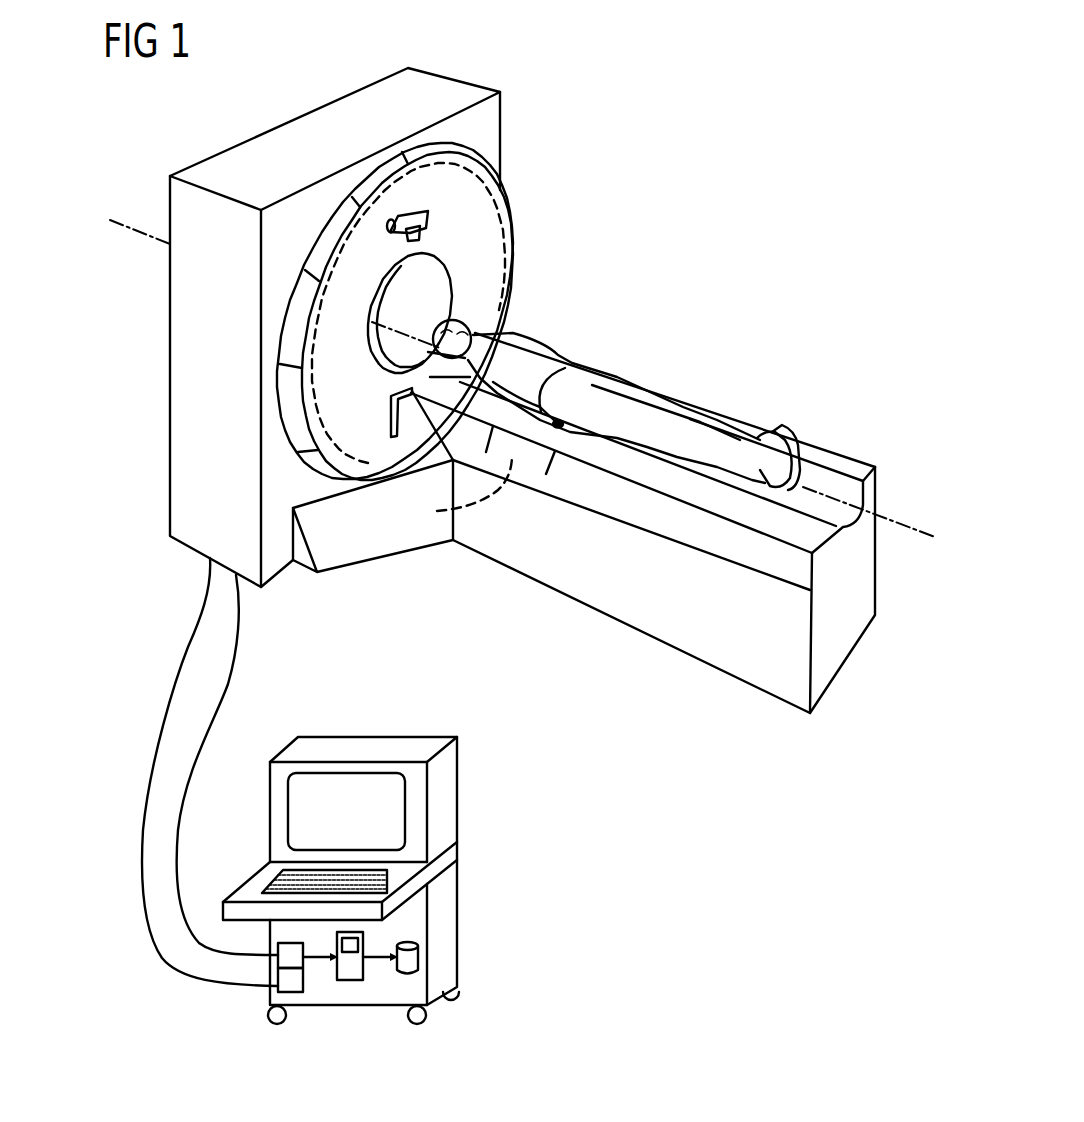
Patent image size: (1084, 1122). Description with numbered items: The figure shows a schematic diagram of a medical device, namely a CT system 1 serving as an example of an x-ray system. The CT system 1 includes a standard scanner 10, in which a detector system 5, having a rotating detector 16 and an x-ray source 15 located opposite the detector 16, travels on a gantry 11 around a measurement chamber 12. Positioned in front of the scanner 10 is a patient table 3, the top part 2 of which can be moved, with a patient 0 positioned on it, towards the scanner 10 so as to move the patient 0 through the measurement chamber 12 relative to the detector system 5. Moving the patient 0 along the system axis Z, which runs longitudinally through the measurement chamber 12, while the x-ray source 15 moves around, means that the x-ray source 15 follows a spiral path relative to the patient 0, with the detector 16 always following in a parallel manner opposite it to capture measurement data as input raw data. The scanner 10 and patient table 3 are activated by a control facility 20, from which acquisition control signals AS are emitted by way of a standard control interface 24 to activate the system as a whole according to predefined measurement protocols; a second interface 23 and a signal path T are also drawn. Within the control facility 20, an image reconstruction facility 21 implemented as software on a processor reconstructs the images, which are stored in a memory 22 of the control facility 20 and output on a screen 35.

The CT system 1 is at (708, 212).
The patient 0 is at (618, 383).
The top part 2 is at (791, 457).
The patient table 3 is at (633, 613).
The detector system 5 is at (393, 199).
The scanner 10 is at (197, 545).
The gantry 11 is at (506, 234).
The measurement chamber 12 is at (392, 293).
The x-ray source 15 is at (424, 216).
The detector 16 is at (404, 424).
The control facility 20 is at (395, 712).
The image reconstruction facility 21 is at (350, 967).
The memory 22 is at (420, 958).
The interface 23 is at (286, 948).
The control interface 24 is at (284, 983).
The screen 35 is at (298, 812).
The acquisition control signals AS is at (168, 710).
The trigger signal T is at (222, 707).
The system axis Z is at (894, 516).